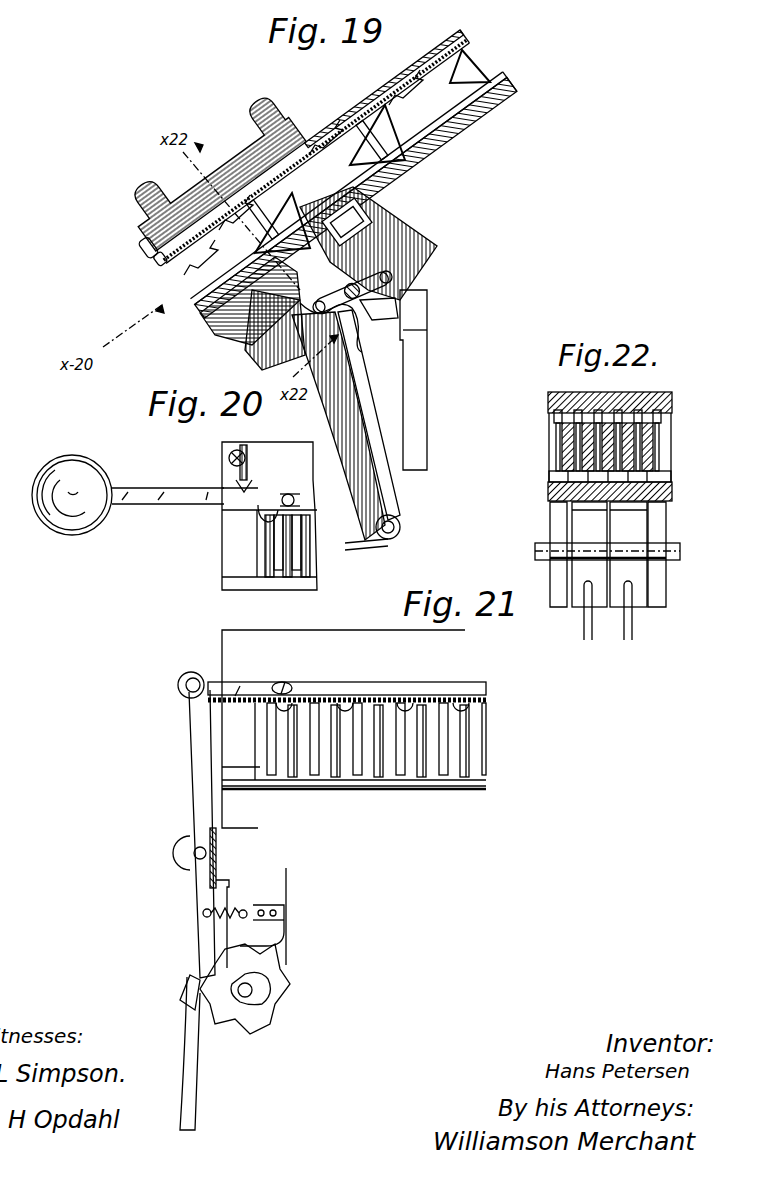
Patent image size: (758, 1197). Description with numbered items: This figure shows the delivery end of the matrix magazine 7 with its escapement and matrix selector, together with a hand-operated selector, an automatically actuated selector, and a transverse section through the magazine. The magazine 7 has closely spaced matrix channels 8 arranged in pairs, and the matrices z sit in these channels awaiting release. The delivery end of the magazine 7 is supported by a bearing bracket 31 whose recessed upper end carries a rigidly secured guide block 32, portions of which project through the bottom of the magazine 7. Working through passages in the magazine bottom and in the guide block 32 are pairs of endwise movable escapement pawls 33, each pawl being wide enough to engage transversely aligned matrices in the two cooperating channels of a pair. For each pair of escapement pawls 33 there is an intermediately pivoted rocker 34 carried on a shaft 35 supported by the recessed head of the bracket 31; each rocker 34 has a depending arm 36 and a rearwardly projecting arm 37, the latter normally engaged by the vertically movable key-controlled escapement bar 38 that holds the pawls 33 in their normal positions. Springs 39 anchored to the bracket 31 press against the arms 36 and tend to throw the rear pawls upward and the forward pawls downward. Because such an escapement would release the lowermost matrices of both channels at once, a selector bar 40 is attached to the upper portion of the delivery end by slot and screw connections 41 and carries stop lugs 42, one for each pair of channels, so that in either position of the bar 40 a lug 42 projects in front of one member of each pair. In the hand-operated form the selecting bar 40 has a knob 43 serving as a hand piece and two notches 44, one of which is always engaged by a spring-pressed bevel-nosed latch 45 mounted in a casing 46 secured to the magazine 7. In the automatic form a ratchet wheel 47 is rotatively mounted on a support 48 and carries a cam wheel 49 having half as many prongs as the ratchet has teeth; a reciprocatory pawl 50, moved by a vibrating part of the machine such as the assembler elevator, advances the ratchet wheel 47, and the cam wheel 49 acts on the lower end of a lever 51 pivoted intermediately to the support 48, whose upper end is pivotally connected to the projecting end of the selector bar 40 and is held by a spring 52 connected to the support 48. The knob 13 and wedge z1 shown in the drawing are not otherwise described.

In FIG. 19, the matrix magazine 7 is at (470, 108).
In FIG. 20, the matrix magazine 7 is at (275, 440).
In FIG. 21, the matrix magazine 7 is at (365, 668).
In FIG. 22, the matrix magazine 7 is at (640, 395).
In FIG. 20, the matrix channels 8 is at (296, 580).
In FIG. 21, the matrix channels 8 is at (282, 780).
In FIG. 22, the matrix channels 8 is at (600, 408).
In FIG. 20, the knob 13 is at (55, 512).
In FIG. 19, the bearing bracket 31 is at (385, 473).
In FIG. 19, the guide block 32 is at (422, 246).
In FIG. 22, the guide block 32 is at (672, 495).
In FIG. 19, the escapement pawls 33 is at (300, 340).
In FIG. 22, the escapement pawls 33 is at (585, 520).
In FIG. 19, the rocker 34 is at (388, 310).
In FIG. 22, the rocker 34 is at (560, 600).
In FIG. 19, the shaft 35 is at (362, 290).
In FIG. 22, the shaft 35 is at (680, 553).
In FIG. 19, the depending arms 36 is at (362, 345).
In FIG. 19, the rearwardly projecting arms 37 is at (418, 312).
In FIG. 19, the escapement bar 38 is at (425, 372).
In FIG. 19, the springs 39 is at (366, 402).
In FIG. 22, the springs 39 is at (626, 628).
In FIG. 19, the selector bar 40 is at (165, 262).
In FIG. 20, the selector bar 40 is at (150, 492).
In FIG. 21, the selector bar 40 is at (380, 700).
In FIG. 19, the slot and screw connections 41 is at (145, 245).
In FIG. 21, the slot and screw connections 41 is at (280, 684).
In FIG. 19, the stop lugs 42 is at (172, 262).
In FIG. 20, the stop lugs 42 is at (265, 512).
In FIG. 21, the stop lugs 42 is at (335, 700).
In FIG. 20, the knob 43 is at (305, 476).
In FIG. 20, the notches 44 is at (268, 478).
In FIG. 20, the bevel-nosed latch 45 is at (225, 480).
In FIG. 20, the casing 46 is at (226, 452).
In FIG. 21, the ratchet wheel 47 is at (290, 980).
In FIG. 21, the support 48 is at (290, 892).
In FIG. 21, the cam wheel 49 is at (287, 1010).
In FIG. 21, the reciprocatory pawl 50 is at (190, 1088).
In FIG. 21, the lever 51 is at (188, 800).
In FIG. 21, the spring 52 is at (215, 912).
In FIG. 19, the matrices z is at (306, 172).
In FIG. 20, the matrices z is at (272, 580).
In FIG. 21, the matrices z is at (368, 780).
In FIG. 22, the matrices z is at (572, 455).
In FIG. 19, the type wedge z1 is at (488, 78).
In FIG. 22, the type wedge z1 is at (565, 420).